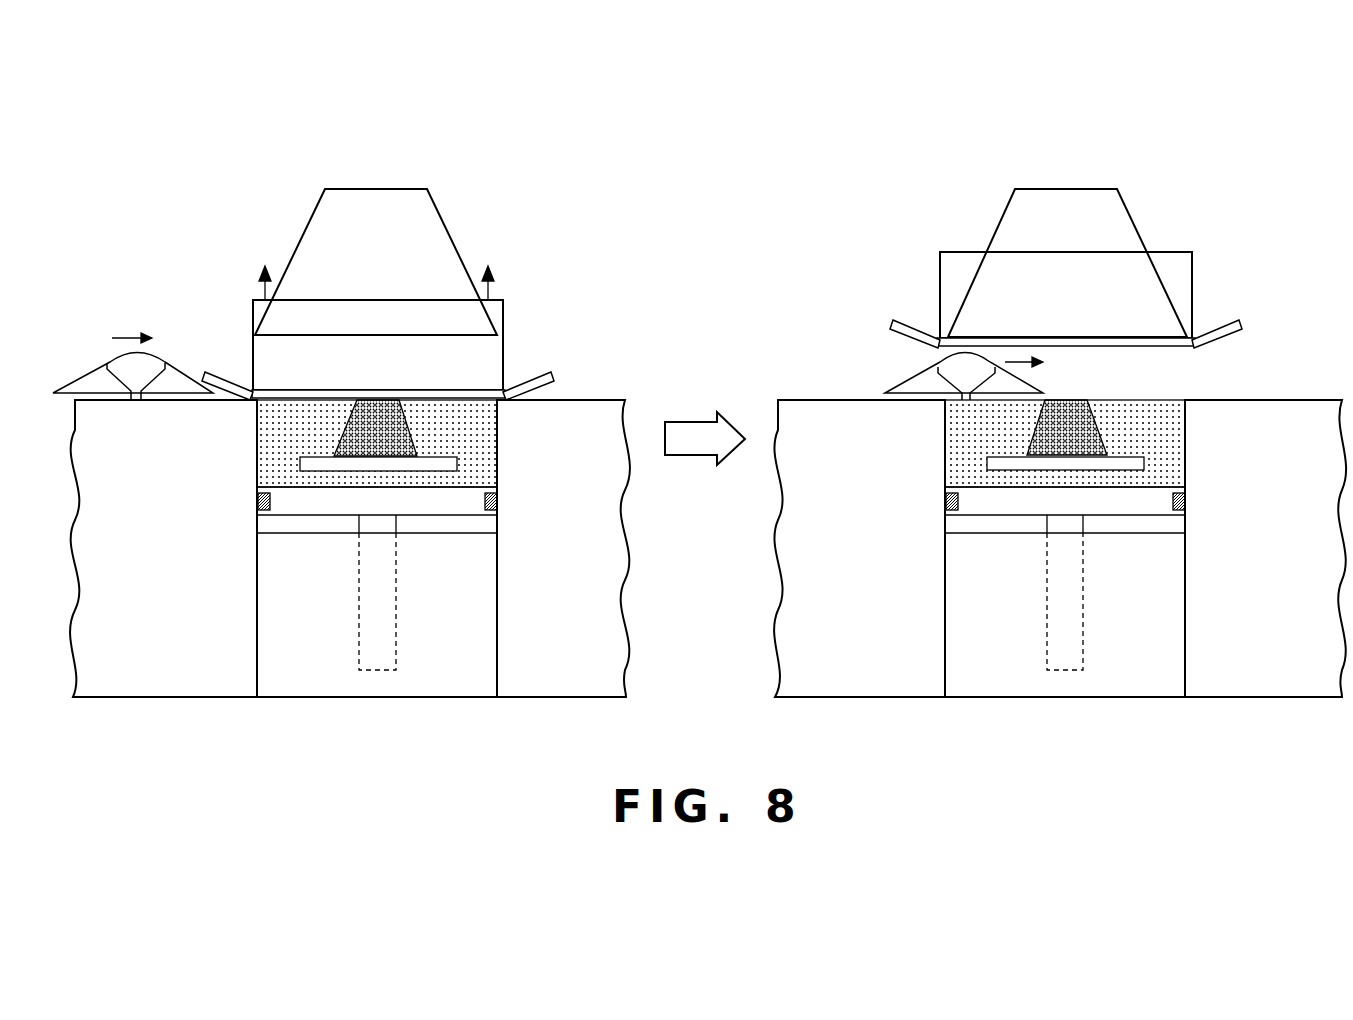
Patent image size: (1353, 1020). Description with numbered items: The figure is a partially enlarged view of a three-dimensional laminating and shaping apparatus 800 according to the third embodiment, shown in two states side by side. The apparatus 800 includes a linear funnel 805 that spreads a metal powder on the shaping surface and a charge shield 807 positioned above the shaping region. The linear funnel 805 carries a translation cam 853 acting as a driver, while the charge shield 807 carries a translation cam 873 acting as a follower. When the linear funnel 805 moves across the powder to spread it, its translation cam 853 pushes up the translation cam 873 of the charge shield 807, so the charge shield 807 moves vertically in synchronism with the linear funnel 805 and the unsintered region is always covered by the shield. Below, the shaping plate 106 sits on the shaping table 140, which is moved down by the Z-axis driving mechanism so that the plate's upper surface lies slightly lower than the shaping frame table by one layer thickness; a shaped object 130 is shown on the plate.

The three-dimensional laminating and shaping apparatus 800 is at (197, 155).
The translation cam (driver) 853 is at (82, 370).
The linear funnel 805 is at (153, 383).
The translation cam (follower) 873 is at (218, 377).
The charge shield 807 is at (277, 402).
The light emitting element / projection 130 is at (398, 432).
The shaping plate 106 is at (323, 463).
The shaping table 140 is at (433, 507).